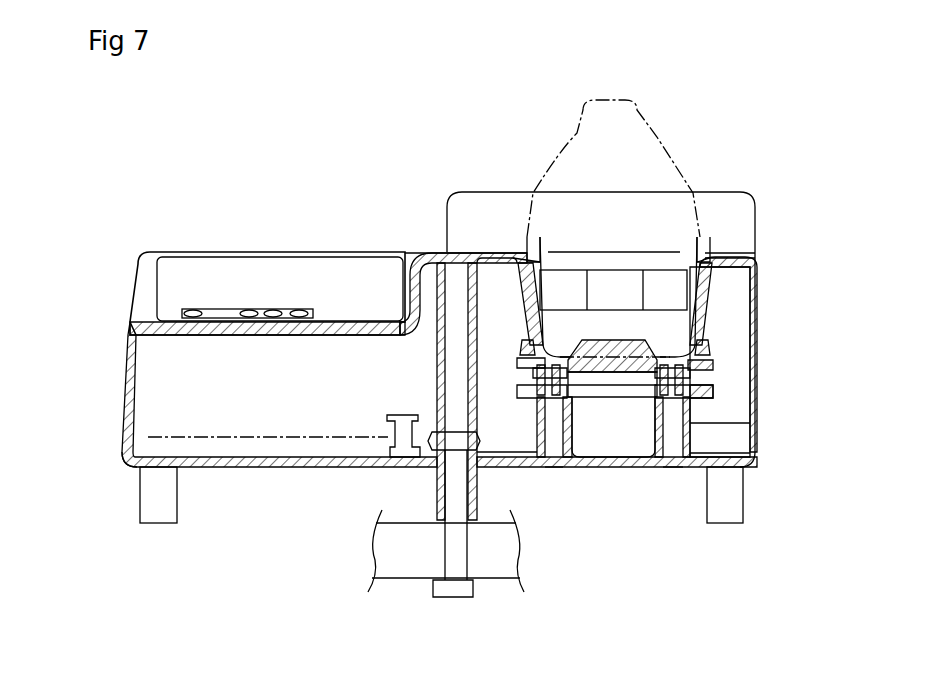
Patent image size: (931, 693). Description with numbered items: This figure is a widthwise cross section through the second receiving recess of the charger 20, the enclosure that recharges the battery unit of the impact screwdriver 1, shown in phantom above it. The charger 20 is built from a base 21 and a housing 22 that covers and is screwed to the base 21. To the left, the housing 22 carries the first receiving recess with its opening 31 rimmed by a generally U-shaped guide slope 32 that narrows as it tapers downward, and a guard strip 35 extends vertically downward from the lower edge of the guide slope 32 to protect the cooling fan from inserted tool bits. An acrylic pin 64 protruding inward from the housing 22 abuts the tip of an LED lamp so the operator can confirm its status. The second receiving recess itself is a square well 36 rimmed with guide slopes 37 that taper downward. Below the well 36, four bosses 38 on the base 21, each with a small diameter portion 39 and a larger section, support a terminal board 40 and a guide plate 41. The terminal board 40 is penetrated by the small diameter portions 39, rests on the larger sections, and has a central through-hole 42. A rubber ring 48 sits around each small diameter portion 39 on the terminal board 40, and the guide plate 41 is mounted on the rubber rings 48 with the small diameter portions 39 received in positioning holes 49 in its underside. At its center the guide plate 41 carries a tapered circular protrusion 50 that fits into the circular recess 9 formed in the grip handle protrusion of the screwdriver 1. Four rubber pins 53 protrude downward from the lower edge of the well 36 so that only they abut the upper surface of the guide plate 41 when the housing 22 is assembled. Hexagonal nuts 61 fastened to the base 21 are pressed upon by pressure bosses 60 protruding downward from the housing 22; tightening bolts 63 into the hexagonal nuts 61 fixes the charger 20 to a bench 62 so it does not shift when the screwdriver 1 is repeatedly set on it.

The impact screwdriver 1 is at (668, 135).
The circular recess 9 is at (640, 343).
The charger 20 is at (233, 195).
The base 21 is at (125, 462).
The housing 22 is at (137, 288).
The opening 31 is at (520, 190).
The guide slope 32 is at (690, 200).
The guard strip 35 is at (612, 290).
The square well 36 is at (707, 298).
The guide slopes 37 is at (707, 293).
The bosses 38 is at (548, 445).
The small diameter portion 39 is at (535, 380).
The terminal board 40 is at (707, 393).
The guide plate 41 is at (712, 364).
The through-hole 42 is at (618, 390).
The rubber ring 48 is at (532, 390).
The positioning holes 49 is at (520, 360).
The circular protrusion 50 is at (612, 350).
The rubber pins 53 is at (523, 343).
The pressure bosses 60 is at (423, 263).
The hexagonal nuts 61 is at (447, 445).
The bench 62 is at (498, 572).
The bolts 63 is at (455, 592).
The acrylic pin 64 is at (298, 310).